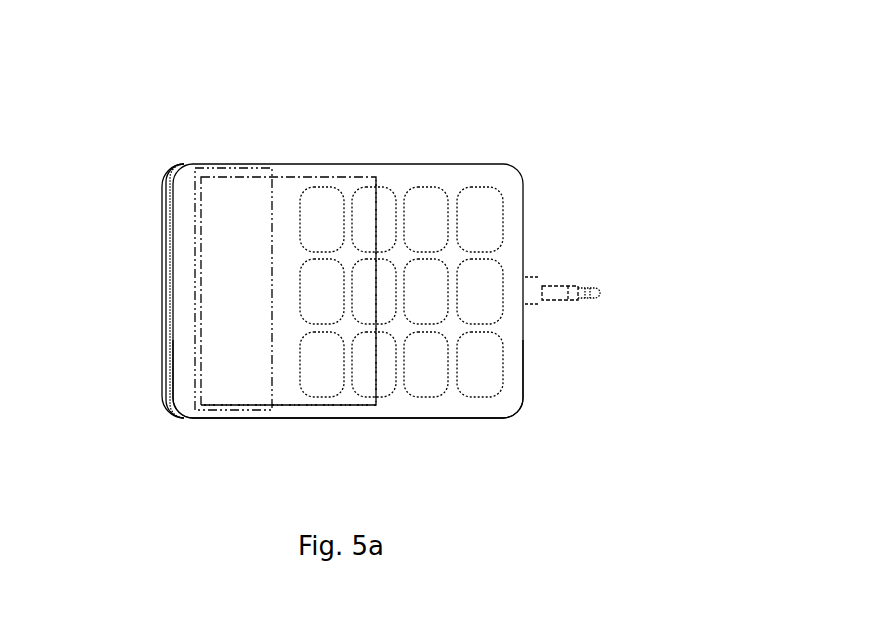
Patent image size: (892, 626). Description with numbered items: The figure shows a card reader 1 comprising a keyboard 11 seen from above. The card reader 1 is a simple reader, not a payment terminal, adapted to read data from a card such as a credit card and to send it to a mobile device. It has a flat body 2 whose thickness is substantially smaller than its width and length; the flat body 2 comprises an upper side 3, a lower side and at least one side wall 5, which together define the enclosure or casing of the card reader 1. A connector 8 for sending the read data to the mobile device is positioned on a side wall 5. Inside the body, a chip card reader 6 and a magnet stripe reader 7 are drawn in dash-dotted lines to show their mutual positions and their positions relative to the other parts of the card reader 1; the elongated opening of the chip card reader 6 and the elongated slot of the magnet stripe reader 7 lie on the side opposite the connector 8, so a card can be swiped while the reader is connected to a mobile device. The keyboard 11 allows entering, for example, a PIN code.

The card reader 1 is at (514, 96).
The flat body 2 is at (207, 437).
The upper side 3 is at (187, 208).
The side wall 5 is at (287, 151).
The chip card reader 6 is at (360, 417).
The magnet stripe reader 7 is at (188, 393).
The connector 8 is at (567, 272).
The keyboard 11 is at (426, 205).